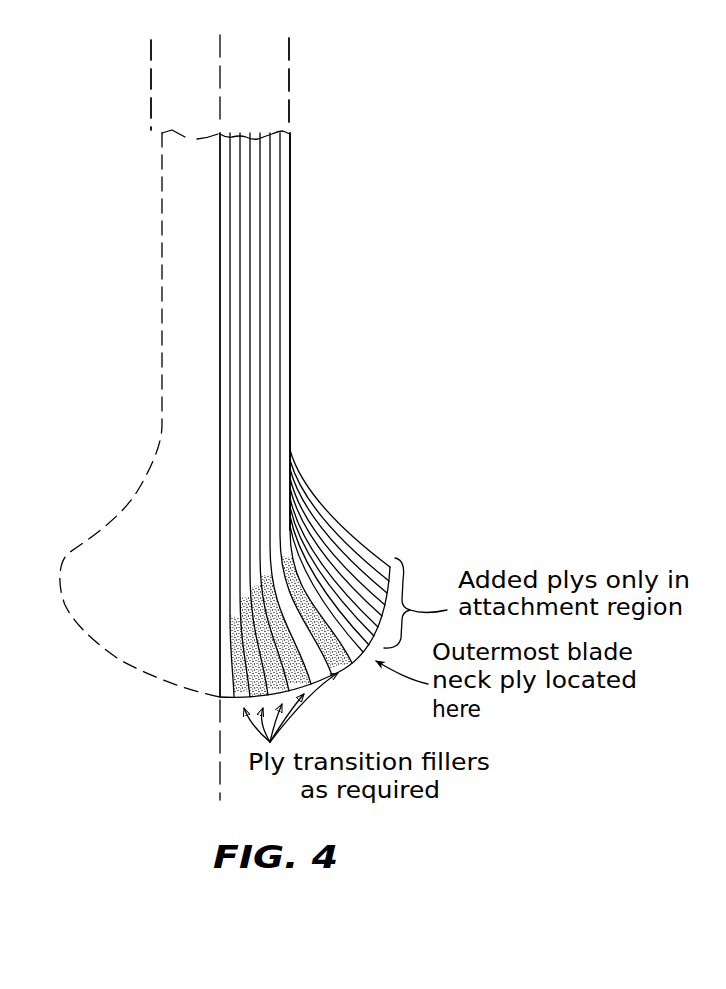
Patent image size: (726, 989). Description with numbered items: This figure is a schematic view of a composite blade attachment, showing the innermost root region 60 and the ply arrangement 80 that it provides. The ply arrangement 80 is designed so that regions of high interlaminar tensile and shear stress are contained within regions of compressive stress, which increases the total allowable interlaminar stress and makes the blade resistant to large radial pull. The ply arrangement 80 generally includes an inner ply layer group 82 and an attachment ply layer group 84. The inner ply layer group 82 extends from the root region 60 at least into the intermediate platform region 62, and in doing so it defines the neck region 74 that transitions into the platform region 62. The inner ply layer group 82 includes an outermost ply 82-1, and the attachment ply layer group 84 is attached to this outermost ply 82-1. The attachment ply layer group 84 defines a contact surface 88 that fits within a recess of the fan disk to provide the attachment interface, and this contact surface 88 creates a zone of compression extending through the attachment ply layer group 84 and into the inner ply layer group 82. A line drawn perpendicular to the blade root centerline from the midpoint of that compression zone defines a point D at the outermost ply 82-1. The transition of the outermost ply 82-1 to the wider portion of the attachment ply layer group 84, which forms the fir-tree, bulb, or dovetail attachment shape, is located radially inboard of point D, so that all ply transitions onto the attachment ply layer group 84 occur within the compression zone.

The root region 60 is at (444, 252).
The platform region 62 is at (268, 79).
The neck region 74 is at (128, 336).
The ply arrangement 80 is at (310, 380).
The inner ply layer group 82 is at (260, 262).
The outermost ply 82-1 is at (290, 200).
The attachment ply layer group 84 is at (347, 486).
The contact surface 88 is at (353, 530).
The point D is at (287, 528).